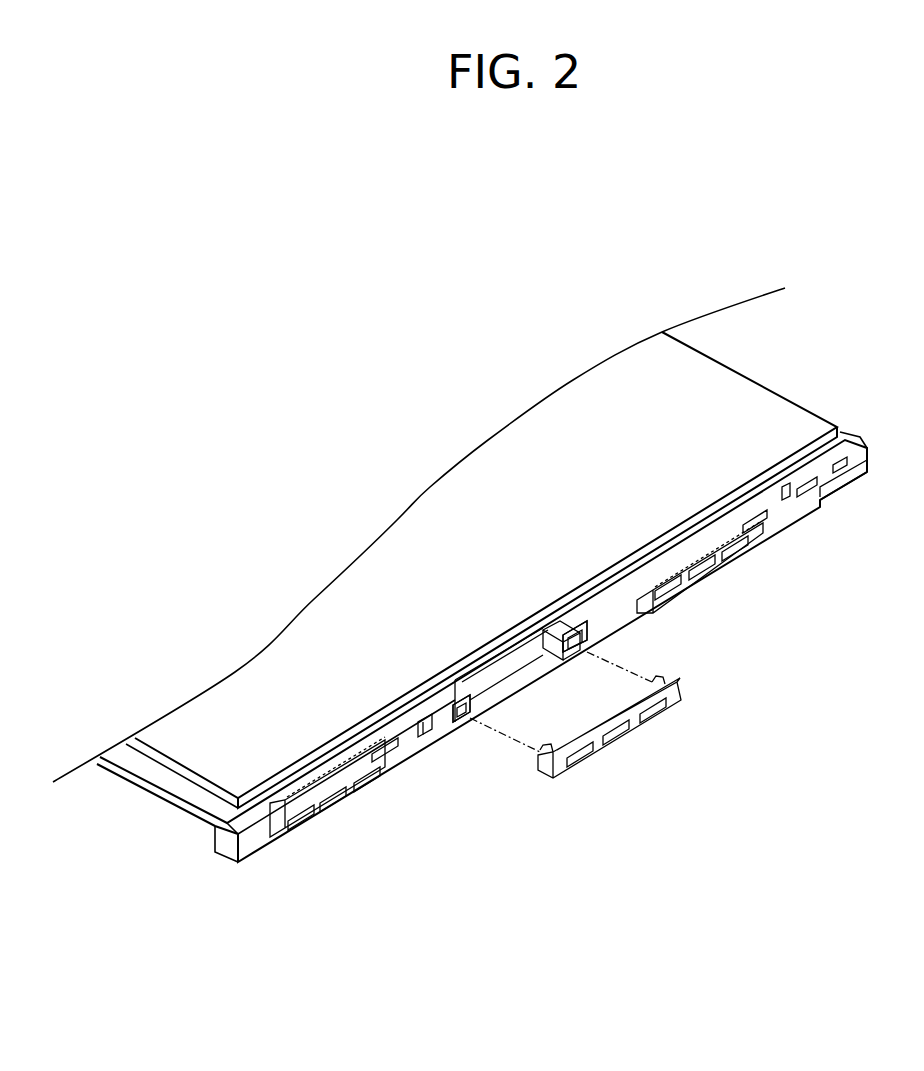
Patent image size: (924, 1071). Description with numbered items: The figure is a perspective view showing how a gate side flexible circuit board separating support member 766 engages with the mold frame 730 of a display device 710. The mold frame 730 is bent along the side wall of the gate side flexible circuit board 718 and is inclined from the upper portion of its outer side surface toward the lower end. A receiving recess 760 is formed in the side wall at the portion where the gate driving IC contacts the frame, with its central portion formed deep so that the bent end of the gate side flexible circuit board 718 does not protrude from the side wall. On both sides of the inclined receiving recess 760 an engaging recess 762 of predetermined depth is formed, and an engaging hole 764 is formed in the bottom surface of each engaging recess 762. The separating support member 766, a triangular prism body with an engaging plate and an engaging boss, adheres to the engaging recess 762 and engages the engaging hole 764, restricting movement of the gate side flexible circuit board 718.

The display panel 710 is at (420, 576).
The gate side flexible circuit board 718 is at (548, 625).
The mold frame 730 is at (722, 583).
The receiving recess 760 is at (500, 684).
The engaging recess 762 is at (560, 653).
The engaging hole 764 is at (593, 642).
The separating support member 766 is at (625, 742).